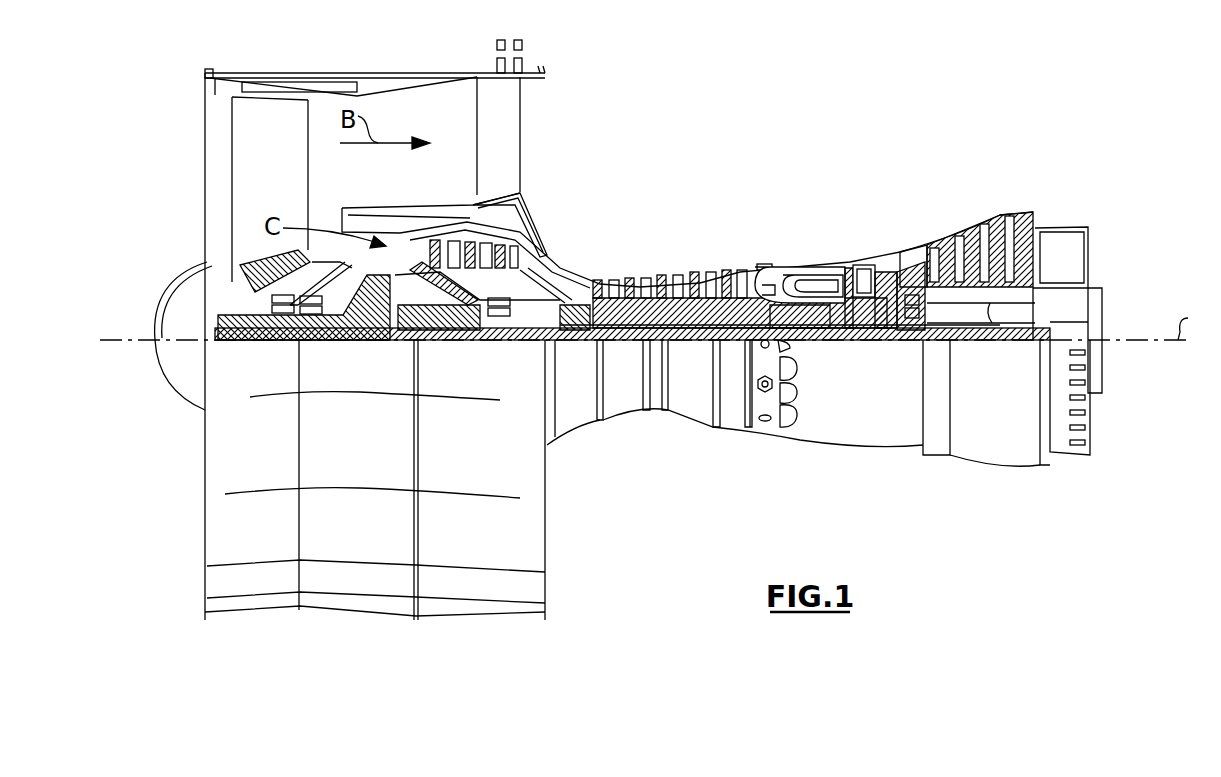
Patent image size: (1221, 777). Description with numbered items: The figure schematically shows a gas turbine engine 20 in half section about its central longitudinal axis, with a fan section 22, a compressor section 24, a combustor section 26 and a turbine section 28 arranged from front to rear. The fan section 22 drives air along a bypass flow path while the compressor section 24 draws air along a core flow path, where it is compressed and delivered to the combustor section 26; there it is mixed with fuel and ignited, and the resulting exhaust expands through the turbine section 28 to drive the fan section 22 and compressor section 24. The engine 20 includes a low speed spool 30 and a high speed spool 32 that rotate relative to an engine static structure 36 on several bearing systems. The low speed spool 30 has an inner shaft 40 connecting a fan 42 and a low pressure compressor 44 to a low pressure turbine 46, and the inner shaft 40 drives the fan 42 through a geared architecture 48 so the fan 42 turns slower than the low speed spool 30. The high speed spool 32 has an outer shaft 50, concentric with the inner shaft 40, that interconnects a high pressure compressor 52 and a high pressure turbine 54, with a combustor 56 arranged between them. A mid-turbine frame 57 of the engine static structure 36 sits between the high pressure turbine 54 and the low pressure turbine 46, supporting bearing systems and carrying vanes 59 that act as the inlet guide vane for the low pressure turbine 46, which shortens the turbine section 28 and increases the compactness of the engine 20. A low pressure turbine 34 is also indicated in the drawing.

The gas turbine engine 20 is at (804, 130).
The fan section 22 is at (400, 48).
The compressor section 24 is at (412, 185).
The combustor section 26 is at (838, 185).
The turbine section 28 is at (1047, 185).
The low speed spool 30 is at (695, 342).
The high speed spool 32 is at (728, 308).
The low pressure turbine 34 is at (988, 312).
The engine static structure 36 is at (732, 420).
The inner shaft 40 is at (565, 345).
The fan 42 is at (255, 194).
The low pressure compressor section 44 is at (483, 247).
The low pressure turbine section 46 is at (985, 227).
The geared architecture 48 is at (382, 327).
The outer shaft 50 is at (806, 326).
The high pressure compressor section 52 is at (667, 277).
The high pressure turbine section 54 is at (865, 263).
The combustor 56 is at (802, 285).
The mid-turbine frame 57 is at (905, 252).
The vanes 59 is at (925, 312).